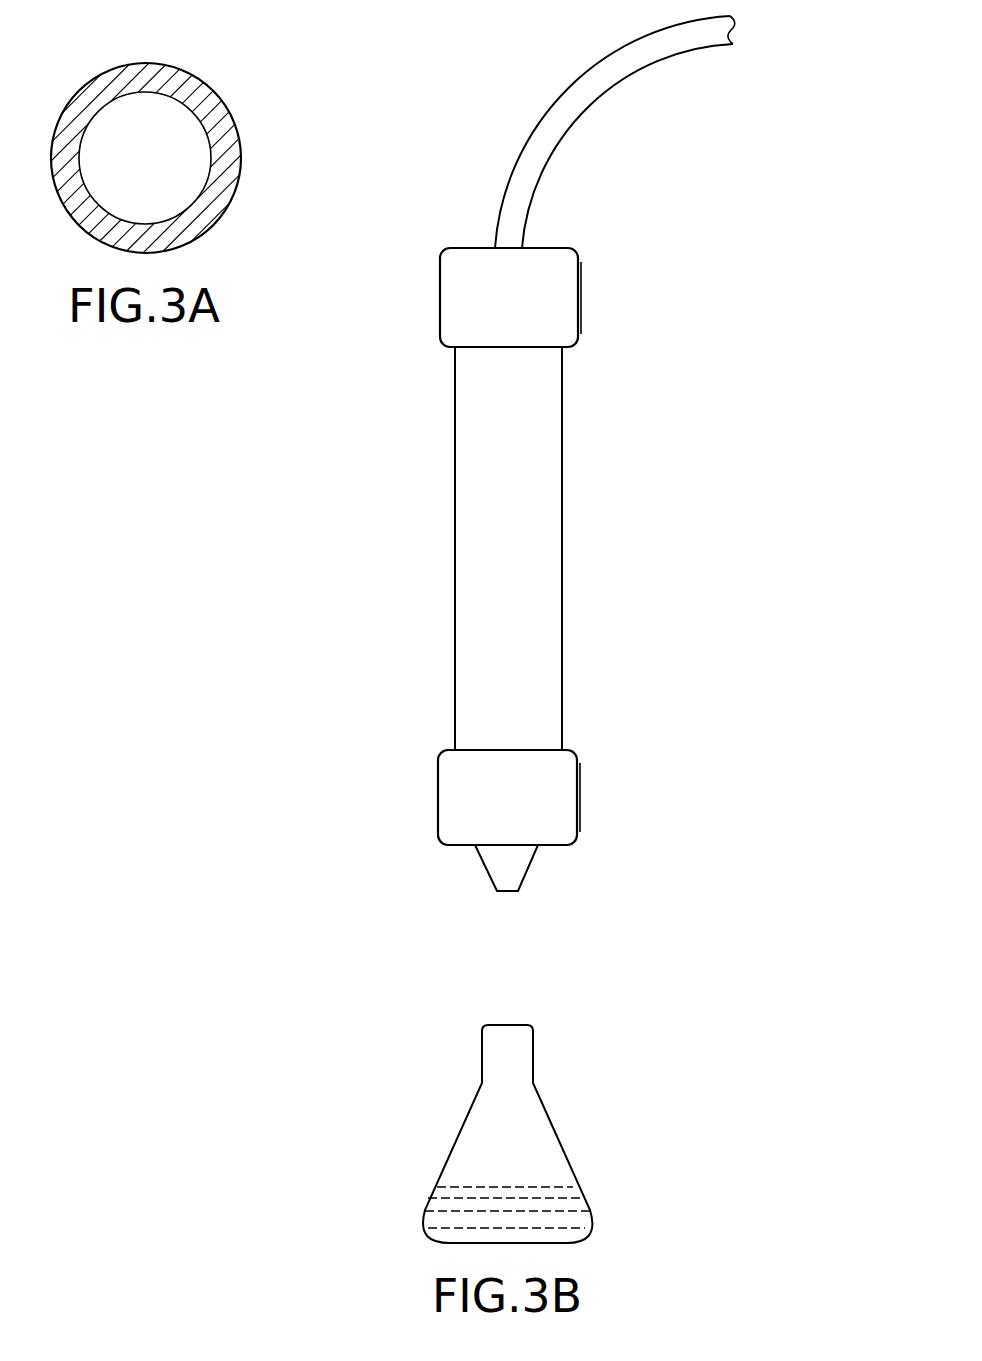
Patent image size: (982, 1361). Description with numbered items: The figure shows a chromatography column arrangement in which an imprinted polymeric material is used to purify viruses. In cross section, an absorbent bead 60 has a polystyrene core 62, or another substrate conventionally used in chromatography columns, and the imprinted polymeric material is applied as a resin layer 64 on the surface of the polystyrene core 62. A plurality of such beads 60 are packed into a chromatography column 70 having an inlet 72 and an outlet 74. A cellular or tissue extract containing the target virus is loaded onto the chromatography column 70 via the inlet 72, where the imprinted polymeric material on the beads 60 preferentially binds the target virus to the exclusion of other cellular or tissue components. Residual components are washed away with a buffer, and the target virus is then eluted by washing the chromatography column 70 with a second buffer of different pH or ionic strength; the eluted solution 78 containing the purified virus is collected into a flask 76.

In FIG. 3A, the absorbent bead 60 is at (198, 132).
In FIG. 3A, the polystyrene core 62 is at (157, 171).
In FIG. 3A, the resin layer 64 is at (233, 195).
In FIG. 3B, the chromatography column 70 is at (562, 482).
In FIG. 3B, the inlet 72 is at (583, 100).
In FIG. 3B, the outlet 74 is at (528, 867).
In FIG. 3B, the flask 76 is at (560, 1143).
In FIG. 3B, the eluted solution 78 is at (555, 1222).